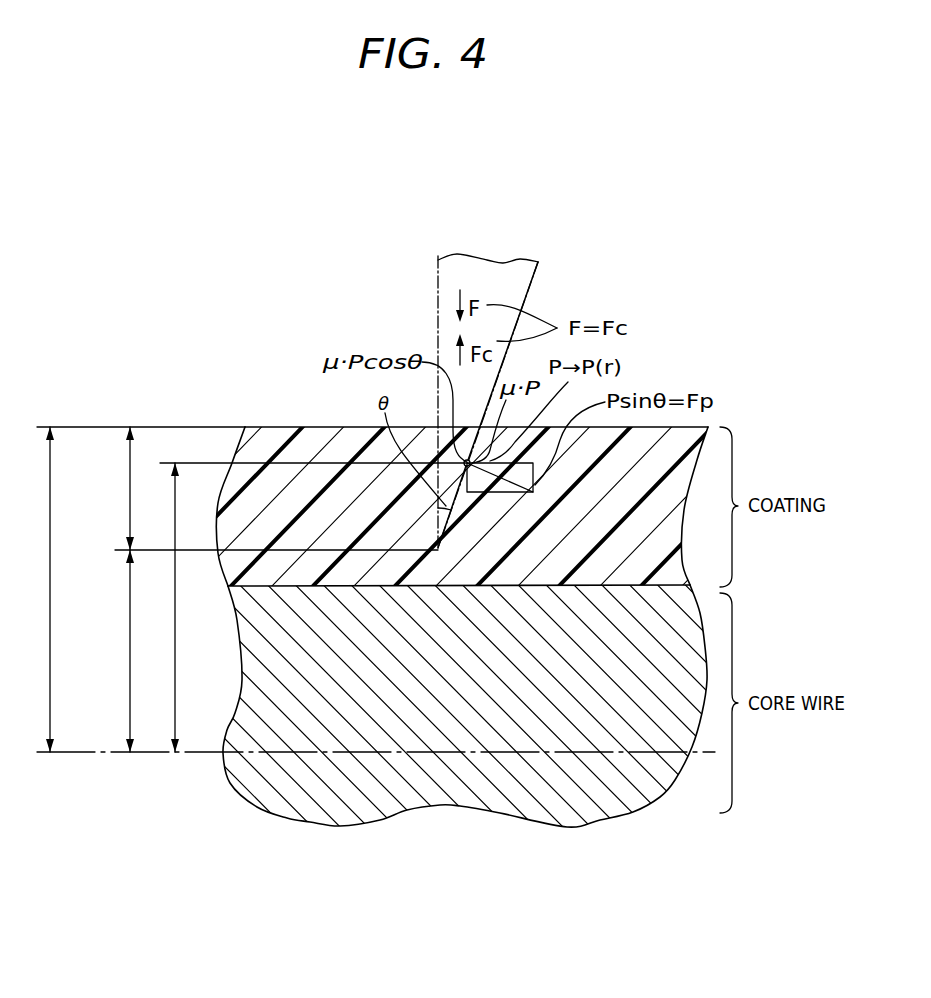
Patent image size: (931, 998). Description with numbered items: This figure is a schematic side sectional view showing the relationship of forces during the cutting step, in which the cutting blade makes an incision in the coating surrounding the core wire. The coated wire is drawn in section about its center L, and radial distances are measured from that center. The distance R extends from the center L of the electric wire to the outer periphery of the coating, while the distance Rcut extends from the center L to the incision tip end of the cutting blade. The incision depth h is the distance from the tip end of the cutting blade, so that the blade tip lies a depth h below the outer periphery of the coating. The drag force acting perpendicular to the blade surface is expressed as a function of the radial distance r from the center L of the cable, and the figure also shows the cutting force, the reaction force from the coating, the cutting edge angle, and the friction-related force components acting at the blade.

The distance from the center of the electric wire to the outer periphery of the coat R is at (38, 589).
The distance from a tip end of the cutting blade (incision depth) h is at (120, 488).
The distance from the center of the electric wire to an incision tip end Rcut is at (103, 651).
The distance in the radial direction from the center of the cable r is at (167, 607).
The center of the cable L is at (80, 756).